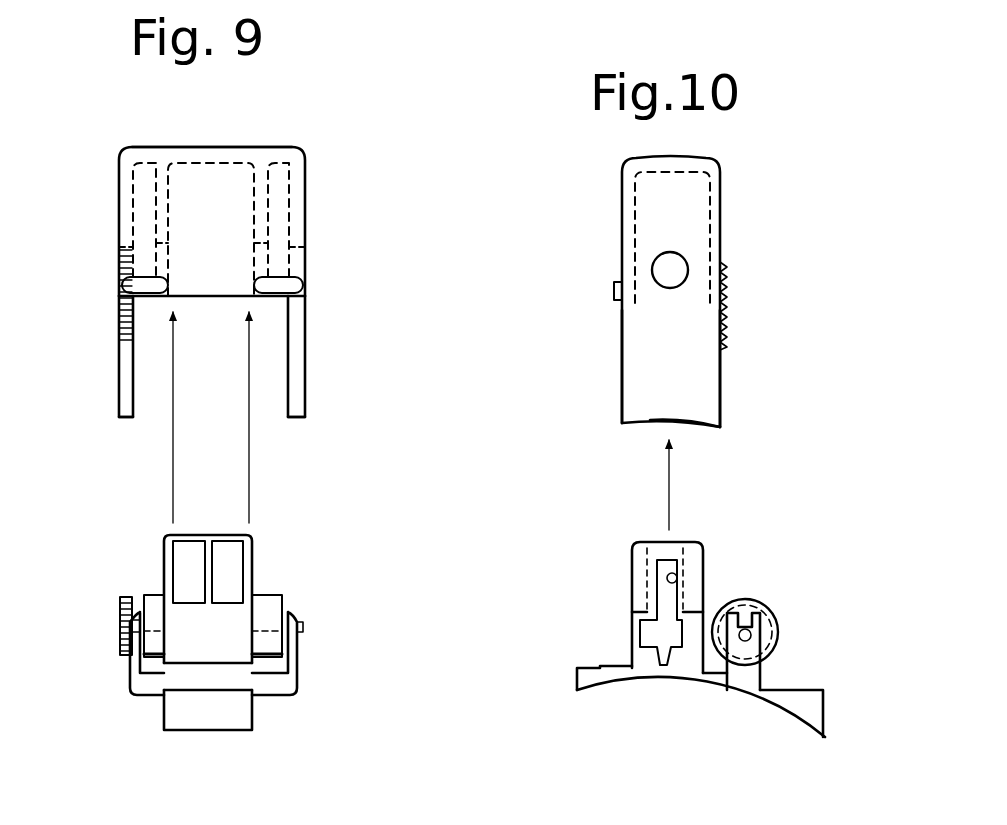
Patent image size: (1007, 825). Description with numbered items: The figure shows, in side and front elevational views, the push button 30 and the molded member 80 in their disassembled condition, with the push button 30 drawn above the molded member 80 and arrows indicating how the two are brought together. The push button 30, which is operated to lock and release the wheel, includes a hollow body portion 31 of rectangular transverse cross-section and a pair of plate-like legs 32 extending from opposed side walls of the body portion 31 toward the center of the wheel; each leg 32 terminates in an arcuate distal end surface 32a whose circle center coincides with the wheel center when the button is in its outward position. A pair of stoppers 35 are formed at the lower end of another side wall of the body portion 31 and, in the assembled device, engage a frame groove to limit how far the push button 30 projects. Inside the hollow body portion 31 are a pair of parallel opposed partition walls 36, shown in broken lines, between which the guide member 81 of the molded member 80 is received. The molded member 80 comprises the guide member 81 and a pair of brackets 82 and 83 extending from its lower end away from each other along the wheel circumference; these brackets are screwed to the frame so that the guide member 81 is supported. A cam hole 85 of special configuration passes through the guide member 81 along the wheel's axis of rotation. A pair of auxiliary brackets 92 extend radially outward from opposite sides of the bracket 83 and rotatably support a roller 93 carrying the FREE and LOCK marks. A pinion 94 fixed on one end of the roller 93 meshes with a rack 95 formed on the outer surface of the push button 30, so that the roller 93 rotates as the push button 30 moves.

In FIG. 9, the push button 30 is at (282, 147).
In FIG. 10, the push button 30 is at (724, 190).
In FIG. 9, the hollow body portion 31 is at (306, 183).
In FIG. 10, the hollow body portion 31 is at (721, 218).
In FIG. 9, the plate-like leg 32 is at (119, 370).
In FIG. 10, the plate-like leg 32 is at (641, 377).
In FIG. 9, the distal end surface 32a is at (124, 420).
In FIG. 10, the distal end surface 32a is at (690, 428).
In FIG. 9, the stopper 35 is at (138, 283).
In FIG. 10, the stopper 35 is at (614, 292).
In FIG. 9, the partition wall 36 is at (153, 200).
In FIG. 9, the molded member 80 is at (158, 715).
In FIG. 10, the molded member 80 is at (606, 645).
In FIG. 9, the guide member 81 is at (254, 560).
In FIG. 10, the guide member 81 is at (632, 560).
In FIG. 9, the bracket 82 is at (222, 682).
In FIG. 10, the bracket 82 is at (589, 690).
In FIG. 9, the bracket 83 is at (201, 720).
In FIG. 10, the bracket 83 is at (797, 693).
In FIG. 10, the cam hole 85 is at (678, 580).
In FIG. 9, the auxiliary bracket 92 is at (130, 663).
In FIG. 10, the auxiliary bracket 92 is at (758, 682).
In FIG. 9, the roller 93 is at (282, 594).
In FIG. 10, the roller 93 is at (777, 628).
In FIG. 9, the pinion 94 is at (122, 620).
In FIG. 10, the pinion 94 is at (745, 660).
In FIG. 9, the rack 95 is at (122, 320).
In FIG. 10, the rack 95 is at (721, 310).